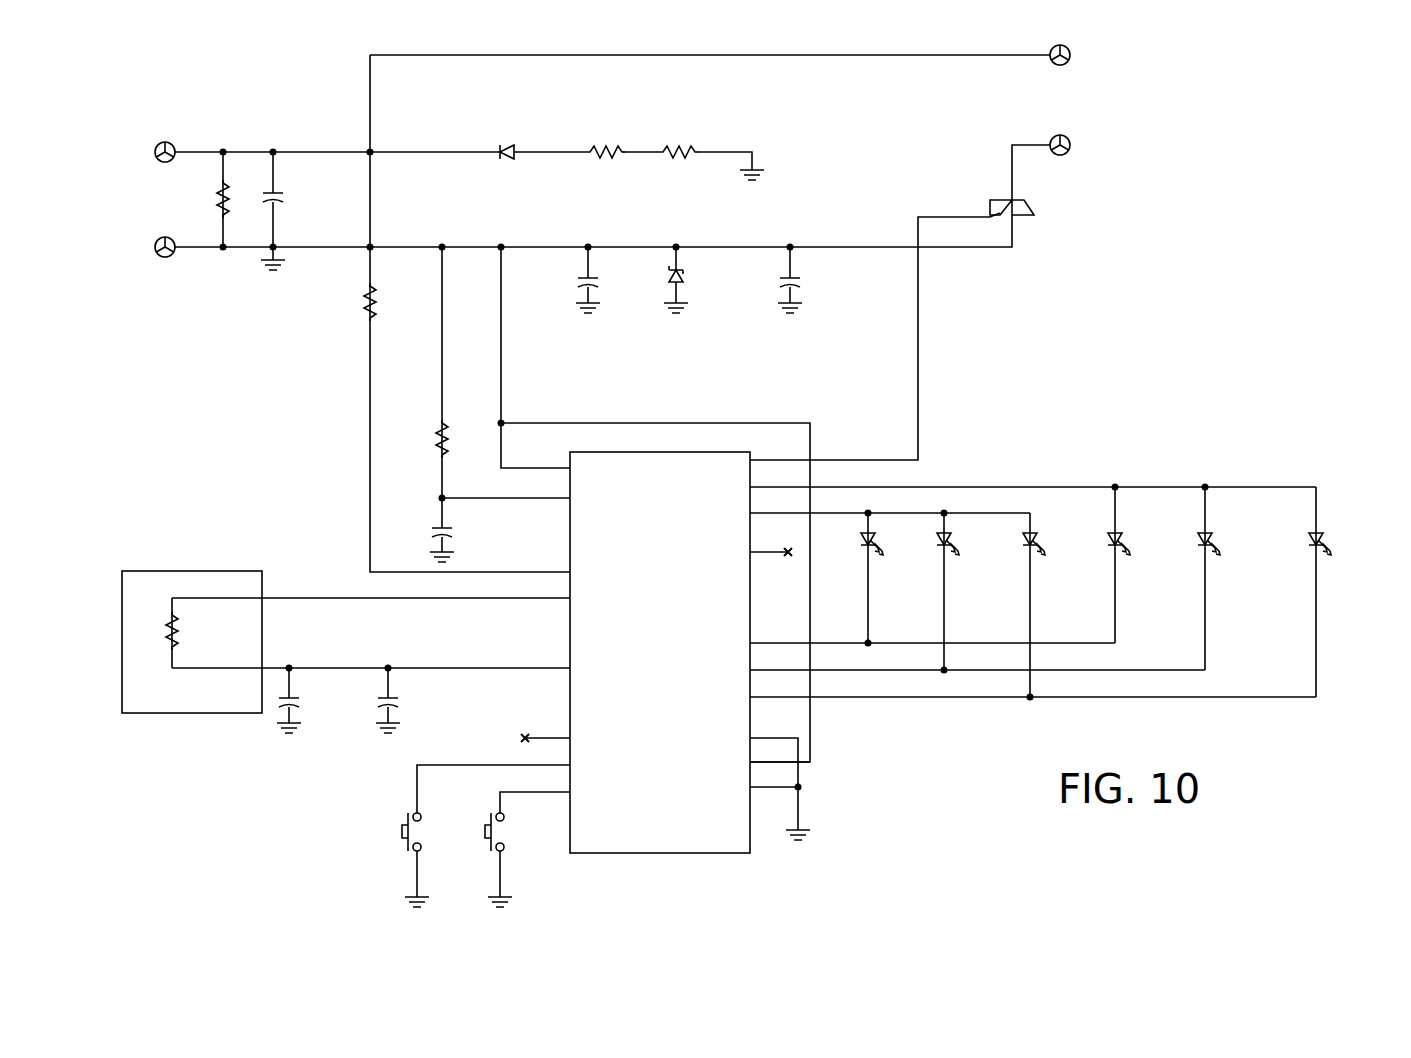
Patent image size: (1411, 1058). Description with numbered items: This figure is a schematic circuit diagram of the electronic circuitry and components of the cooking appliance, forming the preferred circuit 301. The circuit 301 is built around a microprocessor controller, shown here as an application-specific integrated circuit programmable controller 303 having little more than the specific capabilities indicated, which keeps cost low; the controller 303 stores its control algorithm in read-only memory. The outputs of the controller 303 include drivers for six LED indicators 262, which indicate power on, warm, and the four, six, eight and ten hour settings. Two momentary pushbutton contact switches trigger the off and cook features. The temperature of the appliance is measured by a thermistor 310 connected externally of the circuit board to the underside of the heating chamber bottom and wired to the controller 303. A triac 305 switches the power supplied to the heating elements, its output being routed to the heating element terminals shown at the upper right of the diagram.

The circuit 301 is at (741, 476).
The ASIC programmable controller 303 is at (570, 616).
The triac 305 is at (1030, 216).
The thermistor 310 is at (172, 612).
The LED indicators 262 is at (1320, 527).